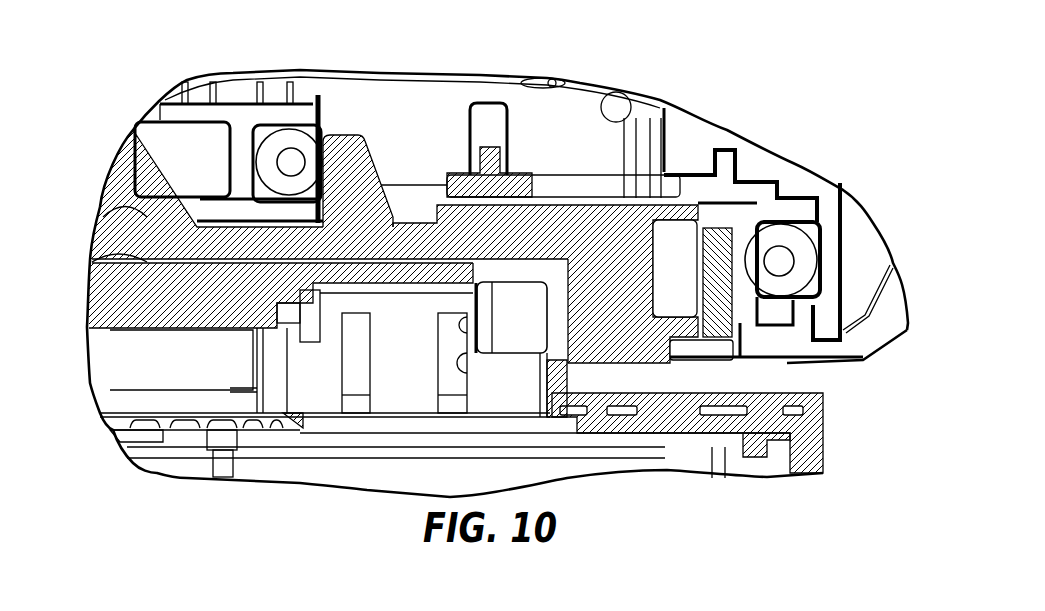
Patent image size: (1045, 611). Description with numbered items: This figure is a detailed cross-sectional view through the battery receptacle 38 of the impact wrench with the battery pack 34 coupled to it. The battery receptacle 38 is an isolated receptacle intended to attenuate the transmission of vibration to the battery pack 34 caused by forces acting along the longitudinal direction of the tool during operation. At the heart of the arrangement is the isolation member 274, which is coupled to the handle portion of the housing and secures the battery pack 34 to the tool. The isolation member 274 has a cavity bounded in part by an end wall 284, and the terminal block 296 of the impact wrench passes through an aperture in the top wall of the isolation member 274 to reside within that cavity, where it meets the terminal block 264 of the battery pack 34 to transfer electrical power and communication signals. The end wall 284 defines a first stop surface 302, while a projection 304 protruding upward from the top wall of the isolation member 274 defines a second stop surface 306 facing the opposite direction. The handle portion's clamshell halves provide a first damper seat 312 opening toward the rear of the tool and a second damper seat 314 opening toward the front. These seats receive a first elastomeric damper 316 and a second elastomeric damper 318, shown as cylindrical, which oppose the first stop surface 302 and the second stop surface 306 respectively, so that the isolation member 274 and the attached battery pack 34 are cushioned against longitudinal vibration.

The battery receptacle 38 is at (113, 455).
The second damper seat 314 is at (283, 117).
The second elastomeric damper 318 is at (273, 150).
The projection 304 is at (338, 133).
The isolation member 274 is at (140, 205).
The second stop surface 306 is at (247, 205).
The first damper seat 312 is at (790, 217).
The first elastomeric damper 316 is at (800, 247).
The first stop surface 302 is at (745, 275).
The end wall 284 is at (727, 300).
The terminal block 296 is at (537, 300).
The terminal block 264 is at (355, 402).
The battery pack 34 is at (667, 418).